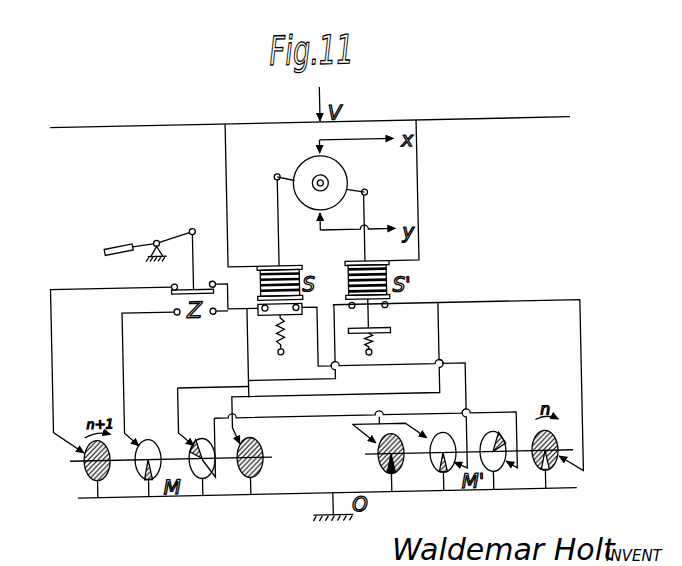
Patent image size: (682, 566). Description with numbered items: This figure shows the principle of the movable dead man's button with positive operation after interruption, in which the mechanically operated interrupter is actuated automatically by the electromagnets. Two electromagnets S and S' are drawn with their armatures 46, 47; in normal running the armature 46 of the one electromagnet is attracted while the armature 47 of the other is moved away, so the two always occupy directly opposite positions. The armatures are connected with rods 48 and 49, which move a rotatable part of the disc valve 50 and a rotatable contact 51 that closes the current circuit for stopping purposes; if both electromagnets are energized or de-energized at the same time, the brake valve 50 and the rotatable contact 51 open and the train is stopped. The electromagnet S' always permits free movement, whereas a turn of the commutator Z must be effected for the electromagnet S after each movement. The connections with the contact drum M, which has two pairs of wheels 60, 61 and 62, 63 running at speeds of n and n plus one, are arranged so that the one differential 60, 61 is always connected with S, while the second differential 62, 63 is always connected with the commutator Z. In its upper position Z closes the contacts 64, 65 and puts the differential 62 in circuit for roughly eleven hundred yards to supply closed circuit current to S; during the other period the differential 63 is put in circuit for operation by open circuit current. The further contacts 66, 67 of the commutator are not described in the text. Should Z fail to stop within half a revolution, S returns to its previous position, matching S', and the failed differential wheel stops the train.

The armature 46 is at (272, 320).
The armature 47 is at (389, 334).
The rod 48 is at (279, 217).
The rod 49 is at (365, 245).
The disc valve 50 is at (343, 166).
The rotatable contact 51 is at (354, 179).
The wheel of differential 60 is at (383, 463).
The wheel of differential 61 is at (435, 463).
The differential wheel 62 is at (88, 472).
The differential wheel 63 is at (142, 472).
The contact 64 is at (173, 284).
The contact 65 is at (213, 282).
The contact 66 is at (174, 309).
The contact 67 is at (215, 312).